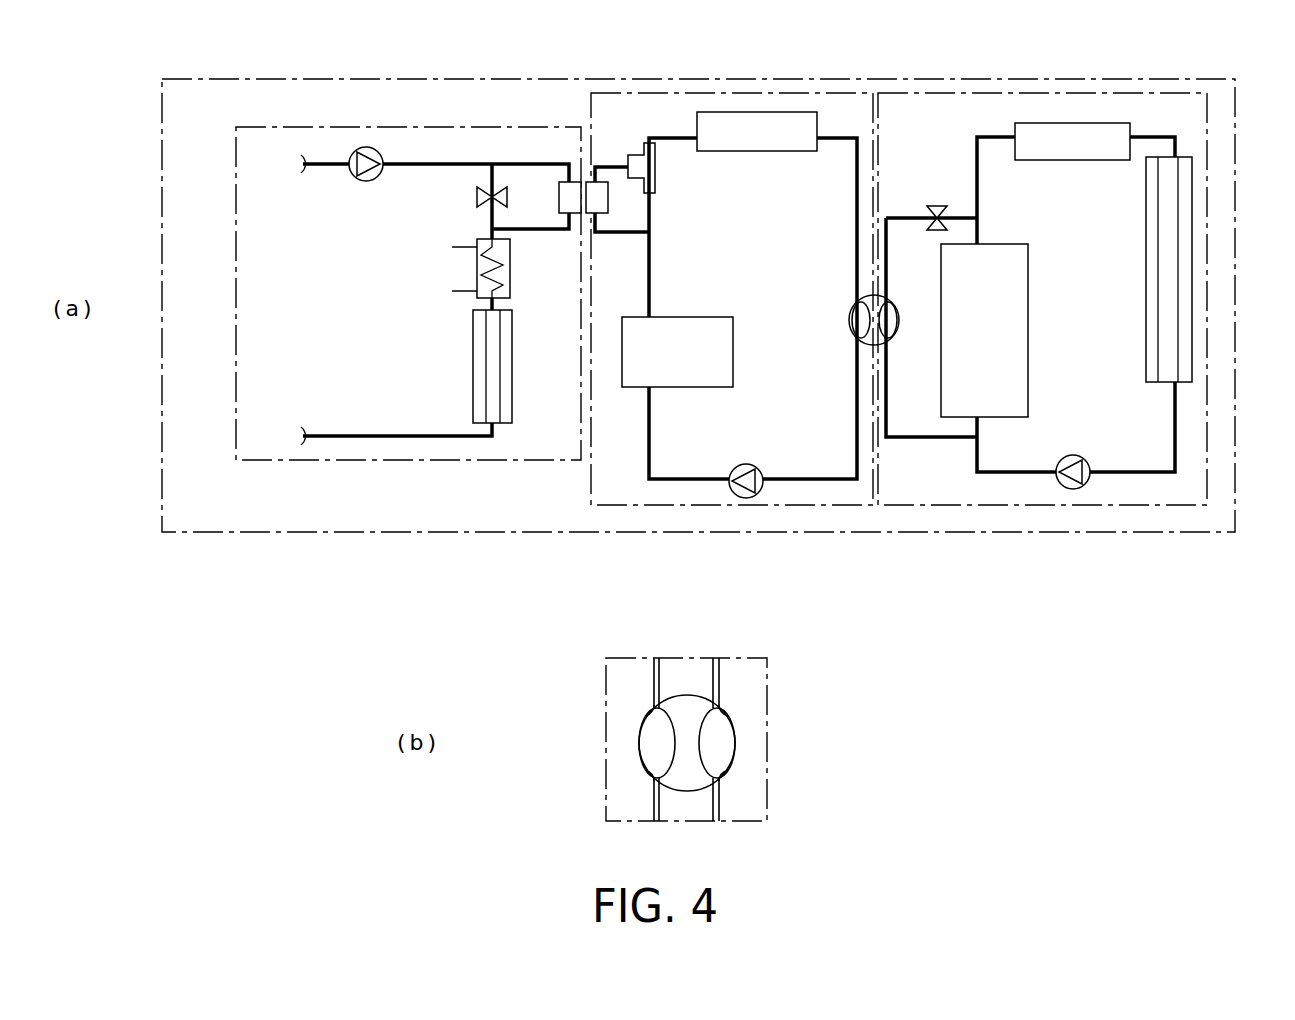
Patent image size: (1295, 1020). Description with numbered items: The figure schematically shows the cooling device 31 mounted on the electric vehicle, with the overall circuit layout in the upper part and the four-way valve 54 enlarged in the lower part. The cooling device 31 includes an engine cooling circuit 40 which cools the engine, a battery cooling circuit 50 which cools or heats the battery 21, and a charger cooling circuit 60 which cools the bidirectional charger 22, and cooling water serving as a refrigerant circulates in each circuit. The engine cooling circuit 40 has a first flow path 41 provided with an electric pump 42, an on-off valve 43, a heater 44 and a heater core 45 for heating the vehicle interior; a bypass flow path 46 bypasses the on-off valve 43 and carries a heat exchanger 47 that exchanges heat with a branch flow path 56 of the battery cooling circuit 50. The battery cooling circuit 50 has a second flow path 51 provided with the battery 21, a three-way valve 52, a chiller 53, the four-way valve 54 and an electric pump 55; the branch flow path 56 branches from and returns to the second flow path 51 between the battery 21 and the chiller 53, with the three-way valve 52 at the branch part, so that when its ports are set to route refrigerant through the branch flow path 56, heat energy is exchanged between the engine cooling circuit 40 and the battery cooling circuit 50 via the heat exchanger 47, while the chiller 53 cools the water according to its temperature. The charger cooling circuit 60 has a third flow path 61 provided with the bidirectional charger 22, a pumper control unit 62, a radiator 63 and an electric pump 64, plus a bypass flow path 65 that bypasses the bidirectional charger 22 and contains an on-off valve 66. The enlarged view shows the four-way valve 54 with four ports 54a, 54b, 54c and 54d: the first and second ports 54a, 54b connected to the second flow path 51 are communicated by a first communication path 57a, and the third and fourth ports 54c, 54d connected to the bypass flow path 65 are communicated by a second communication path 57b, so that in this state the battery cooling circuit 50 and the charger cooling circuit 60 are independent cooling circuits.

The battery 21 is at (720, 316).
The bidirectional charger 22 is at (1028, 298).
The cooling device 31 is at (1200, 79).
The engine cooling circuit 40 is at (275, 126).
The first flow path 41 is at (372, 435).
The electric pump 42 is at (363, 181).
The on-off valve 43 is at (477, 197).
The heater 44 is at (510, 272).
The heater core 45 is at (512, 365).
The bypass flow path 46 is at (532, 163).
The heat exchanger 47 is at (559, 197).
The battery cooling circuit 50 is at (715, 93).
The second flow path 51 is at (665, 478).
The three-way valve 52 is at (656, 172).
The chiller 53 is at (765, 112).
The four-way valve 54 is at (850, 320).
The first port 54a is at (653, 710).
The second port 54b is at (653, 775).
The third port 54c is at (720, 710).
The fourth port 54d is at (720, 775).
The electric pump 55 is at (748, 463).
The branch flow path 56 is at (608, 165).
The first communication path 57a is at (862, 330).
The second communication path 57b is at (889, 333).
The charger cooling circuit 60 is at (945, 93).
The third flow path 61 is at (1010, 471).
The pumper control unit (PCU) 62 is at (1070, 122).
The radiator 63 is at (1192, 300).
The electric pump 64 is at (1077, 457).
The bypass flow path 65 is at (925, 438).
The on-off valve 66 is at (937, 204).